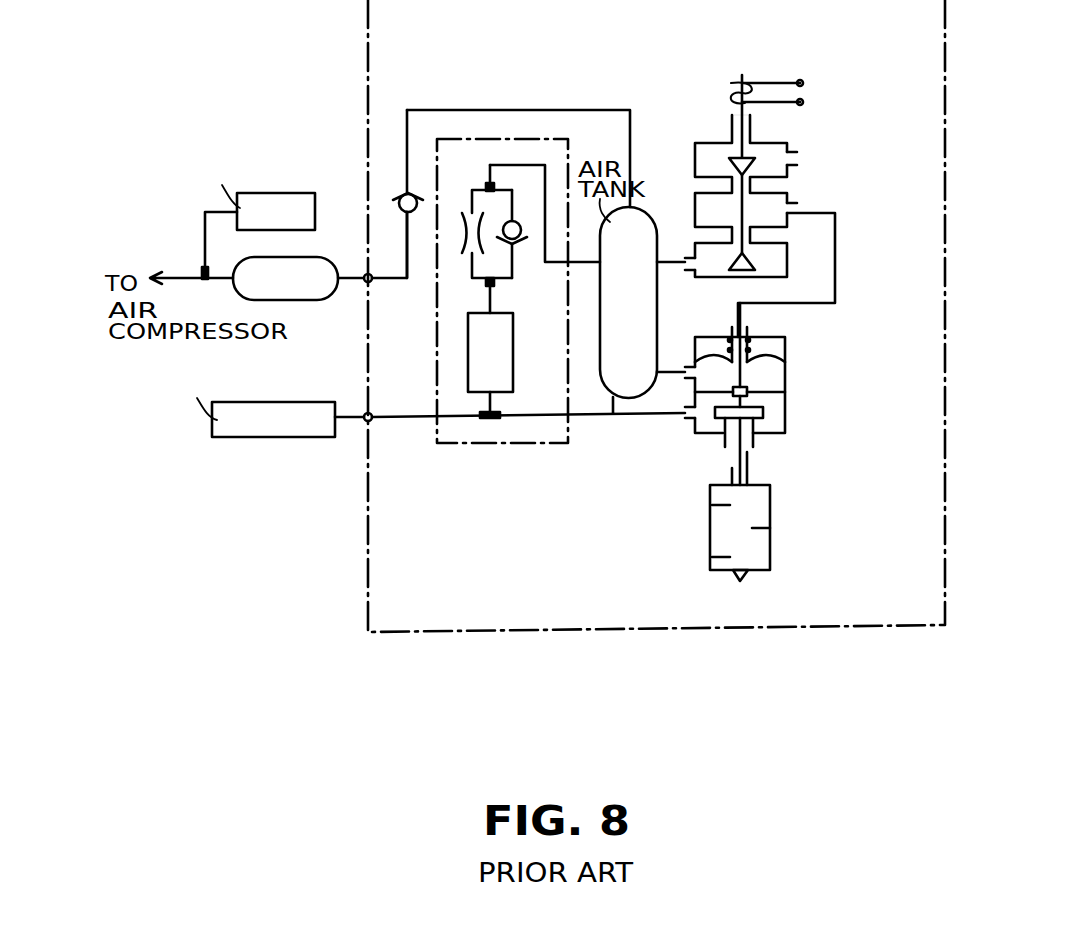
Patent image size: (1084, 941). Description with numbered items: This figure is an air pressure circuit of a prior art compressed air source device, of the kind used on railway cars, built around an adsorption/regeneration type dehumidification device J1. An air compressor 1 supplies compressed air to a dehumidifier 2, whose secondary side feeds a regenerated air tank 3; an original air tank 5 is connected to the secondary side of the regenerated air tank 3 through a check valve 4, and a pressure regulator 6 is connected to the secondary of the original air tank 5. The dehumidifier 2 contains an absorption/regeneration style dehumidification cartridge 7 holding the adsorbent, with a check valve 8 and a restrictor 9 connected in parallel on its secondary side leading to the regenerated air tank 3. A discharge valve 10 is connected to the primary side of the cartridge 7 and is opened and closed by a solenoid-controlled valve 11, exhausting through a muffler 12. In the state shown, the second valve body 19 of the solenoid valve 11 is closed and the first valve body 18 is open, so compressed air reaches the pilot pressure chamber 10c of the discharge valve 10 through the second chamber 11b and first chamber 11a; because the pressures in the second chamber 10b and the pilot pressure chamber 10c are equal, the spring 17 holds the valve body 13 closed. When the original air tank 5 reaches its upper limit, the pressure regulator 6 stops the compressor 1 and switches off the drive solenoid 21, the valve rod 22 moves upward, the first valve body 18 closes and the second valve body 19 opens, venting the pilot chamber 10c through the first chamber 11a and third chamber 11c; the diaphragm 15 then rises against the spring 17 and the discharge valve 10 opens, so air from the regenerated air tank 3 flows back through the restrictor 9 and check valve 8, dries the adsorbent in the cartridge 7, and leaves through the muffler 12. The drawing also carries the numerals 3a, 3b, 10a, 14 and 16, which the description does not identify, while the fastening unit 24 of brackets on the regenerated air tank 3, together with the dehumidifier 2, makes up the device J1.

The air compressor 1 is at (245, 437).
The dehumidifier 2 is at (480, 443).
The regenerated air tank 3 is at (612, 413).
The inlet passage 3a is at (362, 420).
The outlet passage 3b is at (360, 260).
The check valve 4 is at (398, 193).
The original air tank 5 is at (305, 301).
The pressure regulator 6 is at (265, 193).
The dehumidification cartridge 7 is at (467, 350).
The check valve 8 is at (516, 222).
The restrictor 9 is at (462, 232).
The discharge valve 10 is at (702, 447).
The valve plate 10a is at (773, 420).
The second chamber 10b is at (775, 380).
The pilot pressure chamber 10c is at (782, 348).
The solenoid-controlled valve 11 is at (699, 138).
The first chamber 11a is at (775, 207).
The second chamber 11b is at (698, 243).
The third chamber 11c is at (774, 158).
The muffler 12 is at (710, 542).
The valve body 13 is at (747, 453).
The orifice 14 is at (780, 410).
The diaphragm 15 is at (767, 352).
The control port 16 is at (692, 382).
The spring 17 is at (728, 345).
The first valve body 18 is at (750, 260).
The second valve body 19 is at (728, 165).
The drive solenoid 21 is at (769, 82).
The valve rod 22 is at (750, 118).
The fastening unit 24 is at (591, 497).
The adsorption/regeneration type dehumidification device J1 is at (508, 632).